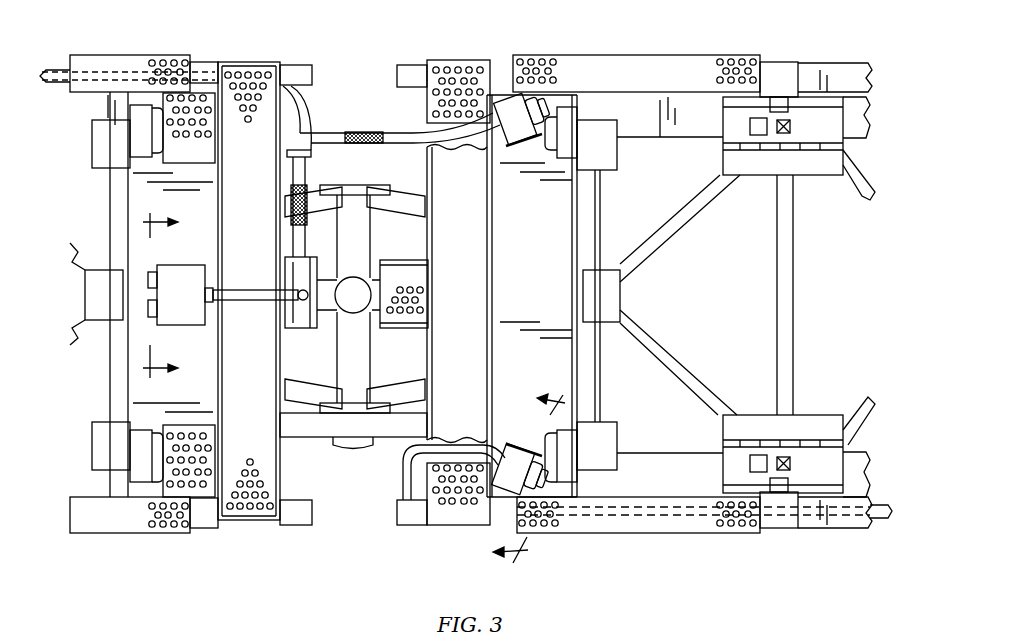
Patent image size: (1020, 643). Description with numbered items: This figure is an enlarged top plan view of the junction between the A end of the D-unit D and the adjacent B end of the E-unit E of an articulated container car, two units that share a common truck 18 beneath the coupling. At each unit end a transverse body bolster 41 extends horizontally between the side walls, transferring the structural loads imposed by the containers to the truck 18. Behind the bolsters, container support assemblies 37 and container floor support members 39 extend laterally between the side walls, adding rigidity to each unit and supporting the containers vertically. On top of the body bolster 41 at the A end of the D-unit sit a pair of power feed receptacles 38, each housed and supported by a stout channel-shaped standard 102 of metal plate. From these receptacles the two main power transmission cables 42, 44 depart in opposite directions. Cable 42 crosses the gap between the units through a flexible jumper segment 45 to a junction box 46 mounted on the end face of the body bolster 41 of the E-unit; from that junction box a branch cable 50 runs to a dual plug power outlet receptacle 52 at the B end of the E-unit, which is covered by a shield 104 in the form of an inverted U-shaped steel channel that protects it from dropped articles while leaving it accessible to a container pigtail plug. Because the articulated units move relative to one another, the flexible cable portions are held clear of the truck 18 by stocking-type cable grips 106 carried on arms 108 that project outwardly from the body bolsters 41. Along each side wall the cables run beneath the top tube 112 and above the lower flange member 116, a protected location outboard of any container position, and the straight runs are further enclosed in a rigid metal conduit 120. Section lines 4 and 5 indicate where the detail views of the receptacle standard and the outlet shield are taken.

The main power transmission cable 42 is at (57, 69).
The lower flange member 116 is at (83, 132).
The dual plug power outlet receptacle 52 is at (147, 275).
The shield 104 is at (188, 278).
The branch cable 50 is at (251, 306).
The junction box 46 is at (306, 317).
The transverse body bolster 41 is at (245, 283).
The flexible jumper segment 45 is at (427, 87).
The main power transmission cable 44 is at (405, 462).
The truck 18 is at (317, 423).
The arm 108 is at (300, 157).
The stocking-type cable grip 106 is at (291, 207).
The power feed receptacle 38 is at (505, 93).
The channel-shaped standard 102 is at (500, 148).
The container floor support member 39 is at (773, 272).
The container support assembly 37 is at (807, 130).
The top tube 112 is at (838, 70).
The rigid metal conduit 120 is at (880, 517).
The section line 4- 4 is at (529, 475).
The section line 5- 5 is at (159, 298).
The D-unit D is at (702, 45).
The E-unit E is at (152, 544).